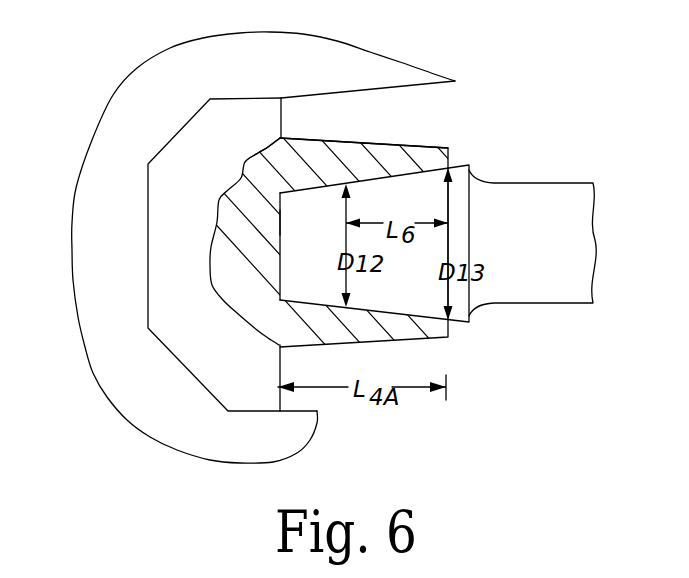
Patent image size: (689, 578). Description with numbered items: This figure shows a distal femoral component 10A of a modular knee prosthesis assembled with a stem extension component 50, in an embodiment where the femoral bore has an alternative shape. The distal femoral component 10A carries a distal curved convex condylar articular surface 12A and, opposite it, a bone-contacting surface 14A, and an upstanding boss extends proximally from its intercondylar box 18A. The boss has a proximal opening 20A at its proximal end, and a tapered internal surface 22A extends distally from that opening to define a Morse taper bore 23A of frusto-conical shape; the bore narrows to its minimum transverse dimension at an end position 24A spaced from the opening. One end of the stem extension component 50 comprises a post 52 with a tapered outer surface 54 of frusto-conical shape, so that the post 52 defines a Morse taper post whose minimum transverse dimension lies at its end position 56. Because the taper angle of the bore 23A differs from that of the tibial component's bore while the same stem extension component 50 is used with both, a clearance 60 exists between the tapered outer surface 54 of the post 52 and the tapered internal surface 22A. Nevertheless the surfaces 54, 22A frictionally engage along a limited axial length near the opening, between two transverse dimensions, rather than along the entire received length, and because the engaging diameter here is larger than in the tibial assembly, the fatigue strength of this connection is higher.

The distal femoral component 10A is at (421, 75).
The condylar articular surface 12A is at (92, 378).
The bone-contacting surface 14A is at (150, 253).
The intercondylar box 18A is at (280, 364).
The proximal opening 20A is at (457, 148).
The internal surface 22A is at (312, 192).
The bore 23A is at (388, 189).
The end position 24A is at (280, 258).
The stem extension component 50 is at (548, 290).
The post 52 is at (470, 168).
The tapered outer surface 54 is at (320, 233).
The end position 56 is at (278, 222).
The clearance 60 is at (262, 166).